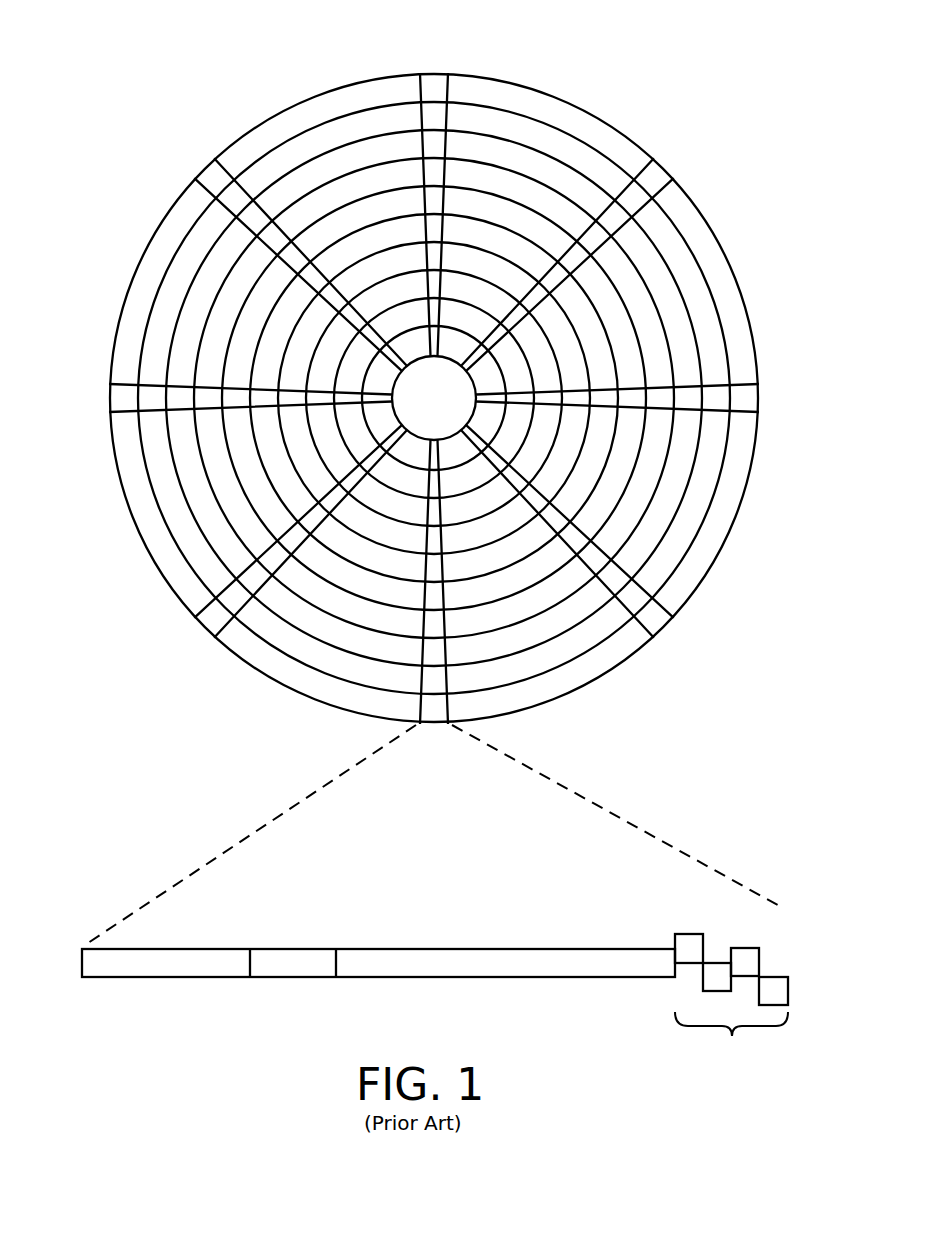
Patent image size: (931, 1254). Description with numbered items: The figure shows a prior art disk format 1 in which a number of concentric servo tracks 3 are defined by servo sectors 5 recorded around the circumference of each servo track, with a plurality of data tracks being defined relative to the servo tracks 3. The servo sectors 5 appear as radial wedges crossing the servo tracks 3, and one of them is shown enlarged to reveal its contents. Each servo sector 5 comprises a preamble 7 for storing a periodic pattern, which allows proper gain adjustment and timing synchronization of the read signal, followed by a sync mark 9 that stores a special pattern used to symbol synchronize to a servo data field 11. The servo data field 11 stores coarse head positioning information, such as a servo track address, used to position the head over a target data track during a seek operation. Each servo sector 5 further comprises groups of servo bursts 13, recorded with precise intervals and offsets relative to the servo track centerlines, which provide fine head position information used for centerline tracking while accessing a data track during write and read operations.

The disk format 1 is at (197, 80).
The servo tracks 3 is at (544, 140).
The servo sectors 5 is at (292, 803).
The preamble 7 is at (150, 975).
The sync mark 9 is at (292, 975).
The servo data field 11 is at (495, 975).
The servo bursts 13 is at (660, 915).